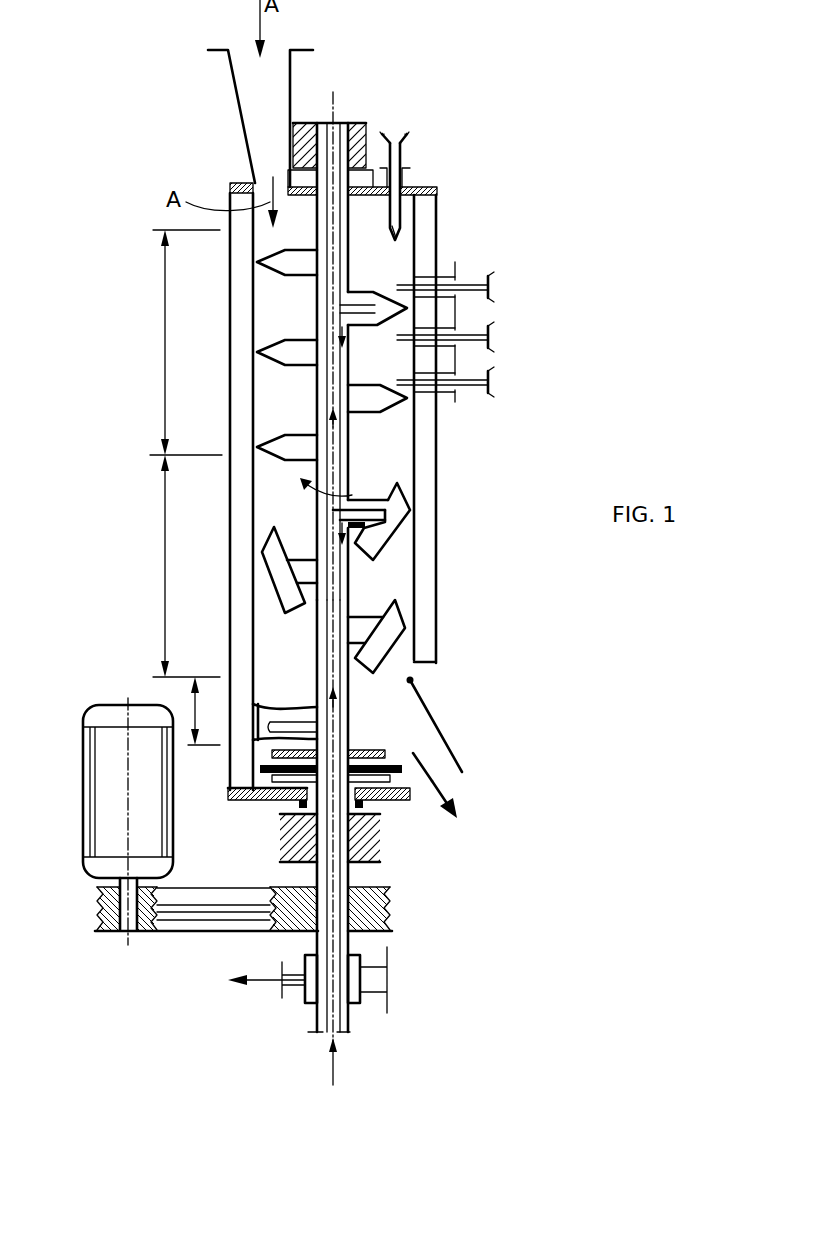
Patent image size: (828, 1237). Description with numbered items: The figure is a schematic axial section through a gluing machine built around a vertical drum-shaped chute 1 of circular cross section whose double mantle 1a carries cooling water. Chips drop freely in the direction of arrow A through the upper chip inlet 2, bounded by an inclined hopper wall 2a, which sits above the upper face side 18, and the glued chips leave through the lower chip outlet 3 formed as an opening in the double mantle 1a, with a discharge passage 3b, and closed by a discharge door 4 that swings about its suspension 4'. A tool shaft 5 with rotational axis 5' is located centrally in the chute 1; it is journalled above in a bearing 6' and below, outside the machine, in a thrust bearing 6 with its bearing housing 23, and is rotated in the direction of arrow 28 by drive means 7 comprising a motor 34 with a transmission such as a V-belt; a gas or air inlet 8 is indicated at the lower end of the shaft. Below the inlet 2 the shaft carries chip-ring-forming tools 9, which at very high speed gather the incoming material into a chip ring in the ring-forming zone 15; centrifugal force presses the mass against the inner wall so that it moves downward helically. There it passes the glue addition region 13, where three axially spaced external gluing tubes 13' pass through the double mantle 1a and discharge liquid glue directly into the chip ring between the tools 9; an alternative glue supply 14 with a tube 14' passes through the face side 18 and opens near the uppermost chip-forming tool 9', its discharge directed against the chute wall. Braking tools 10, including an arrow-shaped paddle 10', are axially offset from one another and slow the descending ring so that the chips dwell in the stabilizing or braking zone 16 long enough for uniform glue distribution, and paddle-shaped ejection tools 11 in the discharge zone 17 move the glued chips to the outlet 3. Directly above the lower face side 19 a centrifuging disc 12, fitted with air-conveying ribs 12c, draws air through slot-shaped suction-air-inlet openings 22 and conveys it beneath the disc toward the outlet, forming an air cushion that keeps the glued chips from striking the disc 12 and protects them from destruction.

The drum-shaped chute 1 is at (437, 537).
The double mantle 1a is at (420, 560).
The chip inlet 2 is at (279, 60).
The hopper inclined wall 2a is at (268, 158).
The chip outlet 3 is at (467, 808).
The discharge passage 3b is at (430, 752).
The discharge door 4 is at (488, 726).
The suspension point of discharge door 4' is at (490, 670).
The tool shaft 5 is at (442, 784).
The rotational axis 5' is at (442, 346).
The thrust bearing 6 is at (423, 878).
The upper bearing 6' is at (344, 112).
The drive means 7 is at (205, 910).
The gas inlet 8 is at (340, 1082).
The chip-ring-forming tools 9 is at (457, 366).
The uppermost chip-forming tool 9' is at (251, 355).
The braking tools 10 is at (421, 600).
The arrow-shaped paddle 10' is at (459, 514).
The ejection tools 11 is at (263, 707).
The centrifuging disc 12 is at (392, 750).
The air-conveying ribs 12c is at (268, 778).
The glue addition means 13 is at (540, 332).
The external gluing tubes 13' is at (490, 334).
The glue supply means 14 is at (416, 153).
The glue supply tube 14' is at (467, 210).
The ring-forming zone 15 is at (186, 342).
The braking zone 16 is at (185, 566).
The discharge zone 17 is at (202, 711).
The upper face side 18 is at (438, 186).
The lower face side 19 is at (376, 789).
The suction-air-inlet openings 22 is at (280, 808).
The bearing housing 23 is at (381, 808).
The direction of rotation arrow 28 is at (352, 477).
The motor 34 is at (105, 932).